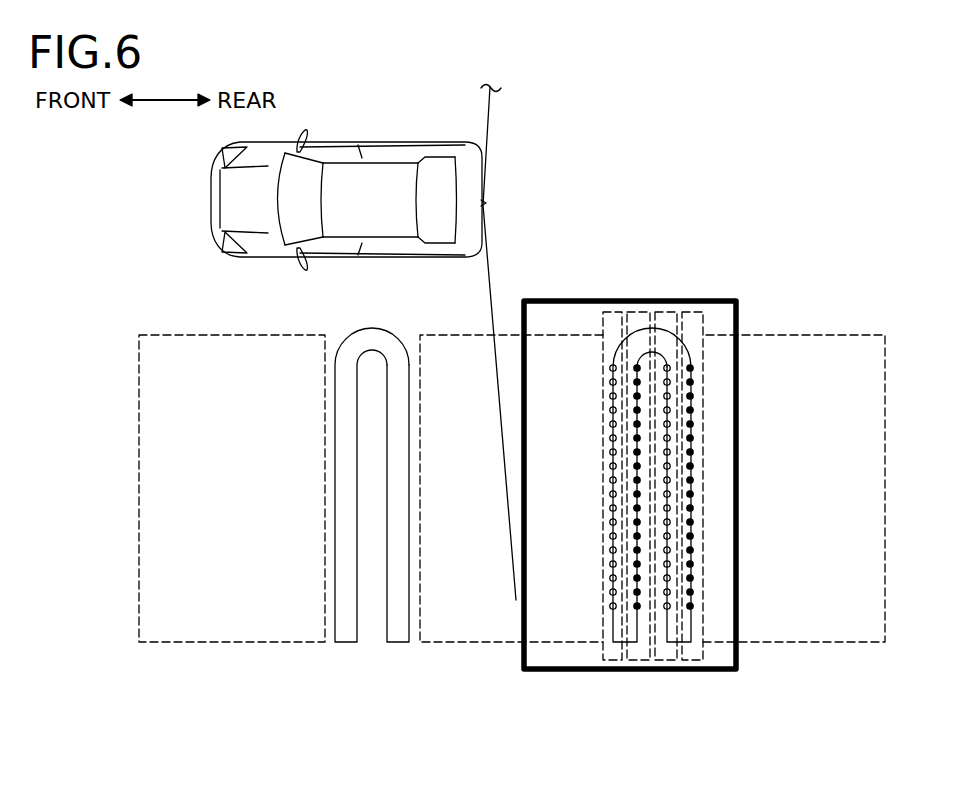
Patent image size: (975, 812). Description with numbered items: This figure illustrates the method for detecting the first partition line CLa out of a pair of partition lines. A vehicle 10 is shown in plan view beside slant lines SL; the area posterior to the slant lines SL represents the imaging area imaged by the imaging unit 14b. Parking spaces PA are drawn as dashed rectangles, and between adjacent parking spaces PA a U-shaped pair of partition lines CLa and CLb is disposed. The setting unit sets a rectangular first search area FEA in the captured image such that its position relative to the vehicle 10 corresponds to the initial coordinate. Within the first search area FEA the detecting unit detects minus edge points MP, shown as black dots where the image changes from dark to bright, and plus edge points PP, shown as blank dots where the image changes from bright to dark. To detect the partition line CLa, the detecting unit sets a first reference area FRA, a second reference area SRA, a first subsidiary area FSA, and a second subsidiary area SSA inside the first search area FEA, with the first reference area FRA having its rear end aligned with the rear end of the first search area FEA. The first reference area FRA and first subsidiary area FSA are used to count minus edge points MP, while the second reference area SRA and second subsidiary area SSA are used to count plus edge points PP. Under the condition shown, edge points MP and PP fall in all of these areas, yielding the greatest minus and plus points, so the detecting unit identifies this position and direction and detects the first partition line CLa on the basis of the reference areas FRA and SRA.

The vehicle 10 is at (408, 140).
The imaging unit 14b is at (487, 203).
The slant lines SL is at (494, 125).
The parking space PA is at (200, 645).
The second partition line CLb is at (347, 645).
The first partition line CLa is at (398, 645).
The first search area FEA is at (708, 298).
The second subsidiary area SSA is at (603, 658).
The first subsidiary area FSA is at (638, 662).
The second reference area SRA is at (667, 662).
The first reference area FRA is at (705, 648).
The plus edge points PP is at (651, 375).
The minus edge points MP is at (645, 378).